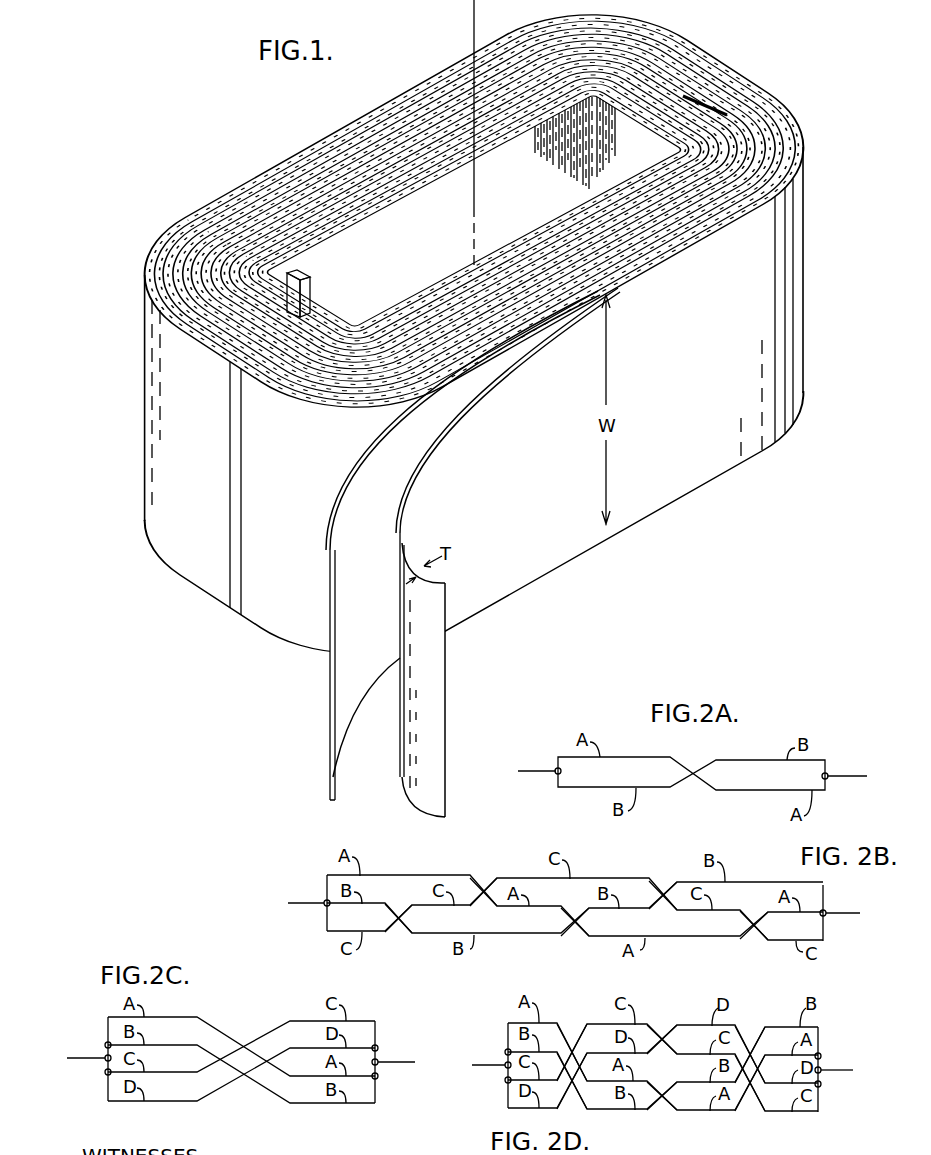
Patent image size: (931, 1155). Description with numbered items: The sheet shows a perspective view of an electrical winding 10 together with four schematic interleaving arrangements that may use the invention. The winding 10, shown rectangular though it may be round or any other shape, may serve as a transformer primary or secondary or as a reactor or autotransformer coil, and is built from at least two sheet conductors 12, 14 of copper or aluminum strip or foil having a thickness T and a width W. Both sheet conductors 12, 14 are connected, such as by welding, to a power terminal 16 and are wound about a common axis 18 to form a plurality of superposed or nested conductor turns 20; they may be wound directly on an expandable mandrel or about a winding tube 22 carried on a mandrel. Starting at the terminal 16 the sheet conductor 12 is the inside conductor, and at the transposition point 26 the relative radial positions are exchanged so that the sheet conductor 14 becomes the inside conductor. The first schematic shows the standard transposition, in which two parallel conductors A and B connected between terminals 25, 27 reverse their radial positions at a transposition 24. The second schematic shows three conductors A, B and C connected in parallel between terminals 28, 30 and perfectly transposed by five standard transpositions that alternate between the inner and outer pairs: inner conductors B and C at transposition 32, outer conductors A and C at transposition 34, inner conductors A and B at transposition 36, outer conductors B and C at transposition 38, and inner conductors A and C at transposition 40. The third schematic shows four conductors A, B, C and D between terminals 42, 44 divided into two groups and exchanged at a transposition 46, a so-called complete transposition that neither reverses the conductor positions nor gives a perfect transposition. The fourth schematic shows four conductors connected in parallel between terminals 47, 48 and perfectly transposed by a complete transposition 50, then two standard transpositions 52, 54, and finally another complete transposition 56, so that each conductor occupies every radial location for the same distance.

In FIG. 1, the electrical winding 10 is at (473, 343).
In FIG. 1, the sheet conductor 12 is at (410, 496).
In FIG. 1, the sheet conductor 14 is at (343, 498).
In FIG. 1, the power terminal 16 is at (311, 293).
In FIG. 1, the common axis 18 is at (477, 8).
In FIG. 1, the conductor turns 20 is at (412, 113).
In FIG. 1, the winding tube 22 is at (508, 138).
In FIG. 2A, the transposition 24 is at (694, 770).
In FIG. 2A, the terminal 25 is at (556, 768).
In FIG. 1, the transposition point 26 is at (690, 94).
In FIG. 2A, the terminal 27 is at (827, 775).
In FIG. 2B, the terminal 28 is at (325, 905).
In FIG. 2B, the terminal 30 is at (826, 912).
In FIG. 2B, the transposition 32 is at (398, 918).
In FIG. 2B, the transposition 34 is at (484, 890).
In FIG. 2B, the transposition 36 is at (575, 918).
In FIG. 2B, the transposition 38 is at (663, 893).
In FIG. 2B, the transposition 40 is at (753, 925).
In FIG. 2C, the terminal 42 is at (104, 1060).
In FIG. 2C, the terminal 44 is at (380, 1063).
In FIG. 2C, the transposition 46 is at (244, 1044).
In FIG. 2D, the terminal 47 is at (505, 1065).
In FIG. 2D, the terminal 48 is at (822, 1070).
In FIG. 2D, the complete transposition 50 is at (573, 1044).
In FIG. 2D, the standard transposition 52 is at (662, 1036).
In FIG. 2D, the standard transposition 54 is at (662, 1098).
In FIG. 2D, the complete transposition 56 is at (752, 1045).